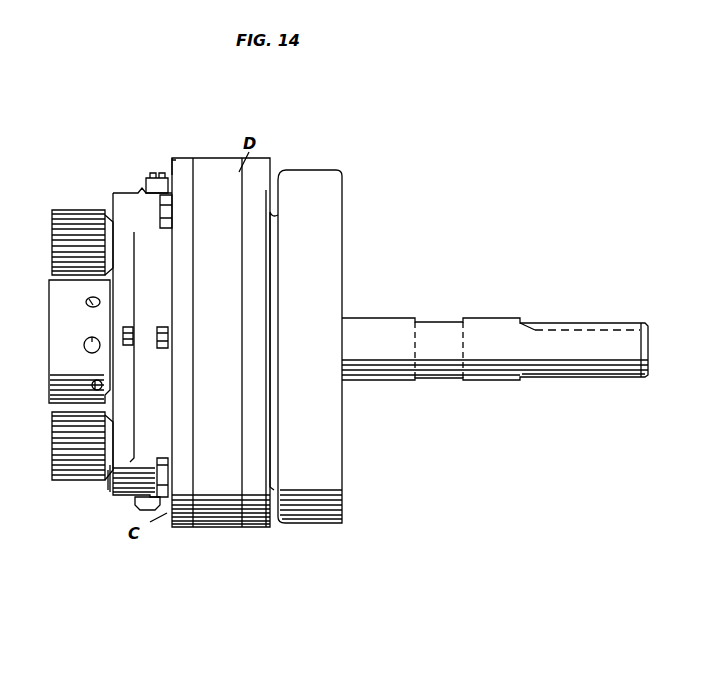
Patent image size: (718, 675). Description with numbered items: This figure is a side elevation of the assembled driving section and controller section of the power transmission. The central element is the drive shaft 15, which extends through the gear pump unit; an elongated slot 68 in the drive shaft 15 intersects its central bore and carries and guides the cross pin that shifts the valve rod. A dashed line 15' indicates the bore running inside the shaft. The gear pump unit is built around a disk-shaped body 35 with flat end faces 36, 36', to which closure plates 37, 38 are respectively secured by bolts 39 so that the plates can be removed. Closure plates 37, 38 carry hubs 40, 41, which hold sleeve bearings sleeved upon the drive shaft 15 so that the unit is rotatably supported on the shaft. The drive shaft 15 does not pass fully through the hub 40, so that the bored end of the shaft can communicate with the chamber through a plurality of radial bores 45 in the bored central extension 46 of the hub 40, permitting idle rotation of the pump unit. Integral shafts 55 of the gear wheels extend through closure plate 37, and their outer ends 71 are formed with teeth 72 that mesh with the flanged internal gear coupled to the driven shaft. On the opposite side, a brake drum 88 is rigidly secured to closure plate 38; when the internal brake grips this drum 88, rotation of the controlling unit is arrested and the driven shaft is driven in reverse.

The drive shaft 15 is at (495, 364).
The shaft bore 15' is at (580, 314).
The disk-shaped body 35 is at (217, 165).
The flat end face 36 is at (166, 342).
The flat end face 36' is at (277, 342).
The closure plate 37 is at (175, 163).
The closure plate 38 is at (260, 173).
The bolts 39 is at (165, 228).
The hub 40 is at (112, 493).
The hub 41 is at (272, 280).
The radial bores 45 is at (90, 337).
The bored central extension 46 is at (50, 349).
The integral shaft 55 is at (110, 225).
The slot 68 is at (431, 335).
The outer end 71 is at (88, 212).
The teeth 72 is at (52, 243).
The brake drum 88 is at (335, 192).